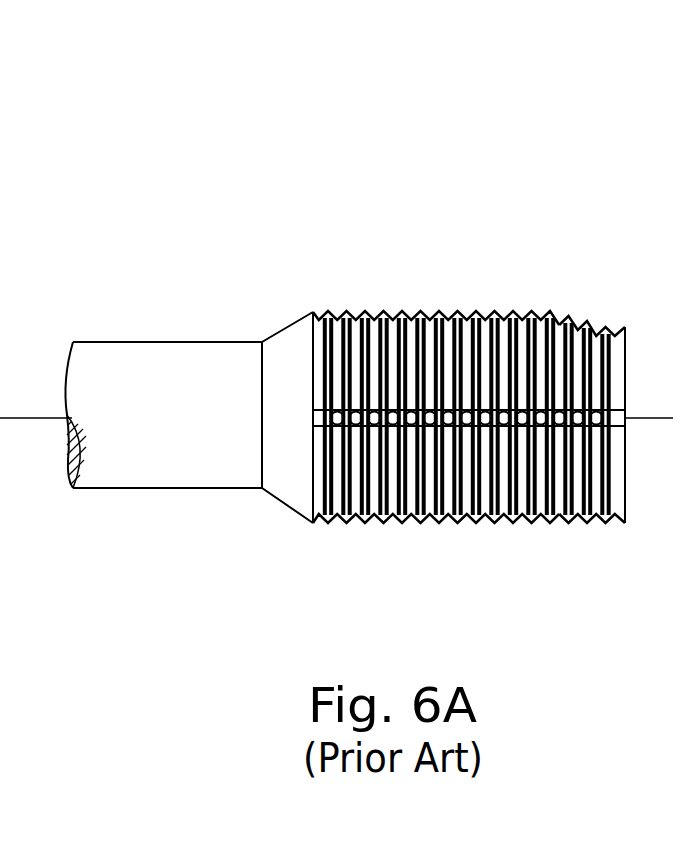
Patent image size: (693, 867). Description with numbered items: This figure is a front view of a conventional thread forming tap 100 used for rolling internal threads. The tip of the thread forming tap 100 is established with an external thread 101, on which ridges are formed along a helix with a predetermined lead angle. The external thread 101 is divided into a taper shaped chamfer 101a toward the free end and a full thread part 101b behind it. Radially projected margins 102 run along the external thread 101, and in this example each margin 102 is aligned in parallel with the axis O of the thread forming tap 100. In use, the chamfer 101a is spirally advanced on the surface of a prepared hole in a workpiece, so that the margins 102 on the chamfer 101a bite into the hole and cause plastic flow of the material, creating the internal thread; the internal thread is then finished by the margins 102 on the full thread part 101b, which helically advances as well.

The thread forming tap 100 is at (118, 168).
The external thread 101 is at (469, 362).
The chamfer 101a is at (592, 383).
The full thread part 101b is at (560, 286).
The margin 102 is at (318, 418).
The axis O is at (642, 418).